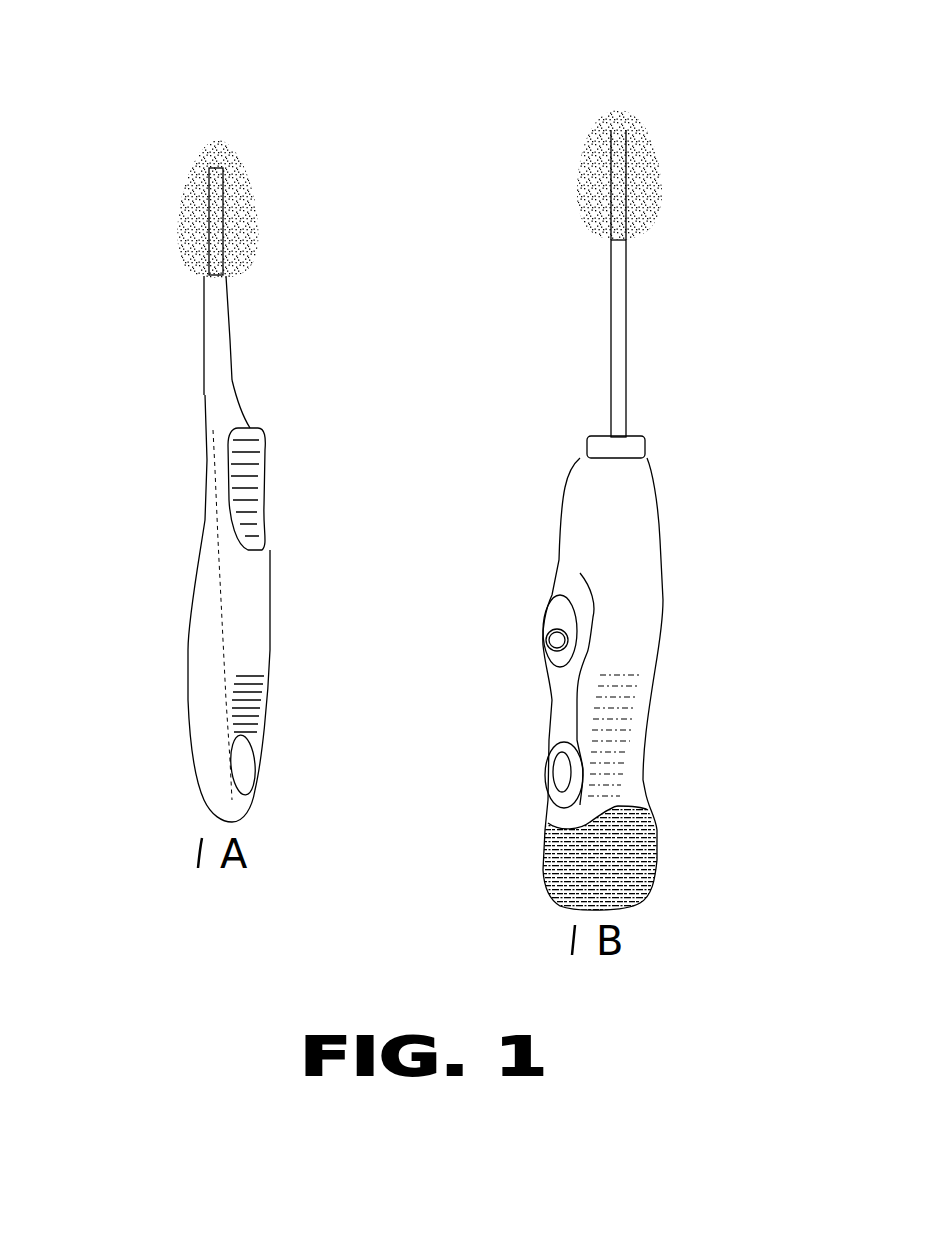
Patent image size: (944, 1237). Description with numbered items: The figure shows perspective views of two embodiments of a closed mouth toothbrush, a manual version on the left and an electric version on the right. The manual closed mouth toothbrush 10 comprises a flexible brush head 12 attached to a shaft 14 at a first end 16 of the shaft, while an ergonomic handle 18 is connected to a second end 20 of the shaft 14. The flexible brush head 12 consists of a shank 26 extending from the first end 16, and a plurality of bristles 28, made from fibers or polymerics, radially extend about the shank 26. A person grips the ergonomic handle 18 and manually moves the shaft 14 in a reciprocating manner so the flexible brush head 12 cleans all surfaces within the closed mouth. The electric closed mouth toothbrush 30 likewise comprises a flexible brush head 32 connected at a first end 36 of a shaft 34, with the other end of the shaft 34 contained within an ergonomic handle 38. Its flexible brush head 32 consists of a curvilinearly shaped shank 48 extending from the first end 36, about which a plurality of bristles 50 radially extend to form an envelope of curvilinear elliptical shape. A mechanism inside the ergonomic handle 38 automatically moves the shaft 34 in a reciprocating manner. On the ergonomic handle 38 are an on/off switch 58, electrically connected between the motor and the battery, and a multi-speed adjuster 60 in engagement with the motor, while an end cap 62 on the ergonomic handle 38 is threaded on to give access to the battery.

In FIG. 1A, the closed mouth toothbrush 10 is at (120, 262).
In FIG. 1A, the flexible brush head 12 is at (252, 170).
In FIG. 1A, the shaft 14 is at (238, 352).
In FIG. 1A, the first end 16 is at (218, 292).
In FIG. 1A, the ergonomic handle 18 is at (196, 623).
In FIG. 1A, the second end 20 is at (216, 404).
In FIG. 1A, the shank 26 is at (216, 204).
In FIG. 1A, the plurality of bristles 28 is at (195, 167).
In FIG. 1B, the closed mouth toothbrush 30 is at (740, 168).
In FIG. 1B, the flexible brush head 32 is at (575, 158).
In FIG. 1B, the shaft 34 is at (642, 314).
In FIG. 1B, the first end 36 is at (612, 258).
In FIG. 1B, the ergonomic handle 38 is at (655, 556).
In FIG. 1B, the shank 48 is at (622, 196).
In FIG. 1B, the plurality of bristles 50 is at (632, 162).
In FIG. 1B, the on/off switch 58 is at (560, 772).
In FIG. 1B, the multi-speed adjuster 60 is at (557, 640).
In FIG. 1B, the end cap 62 is at (650, 856).